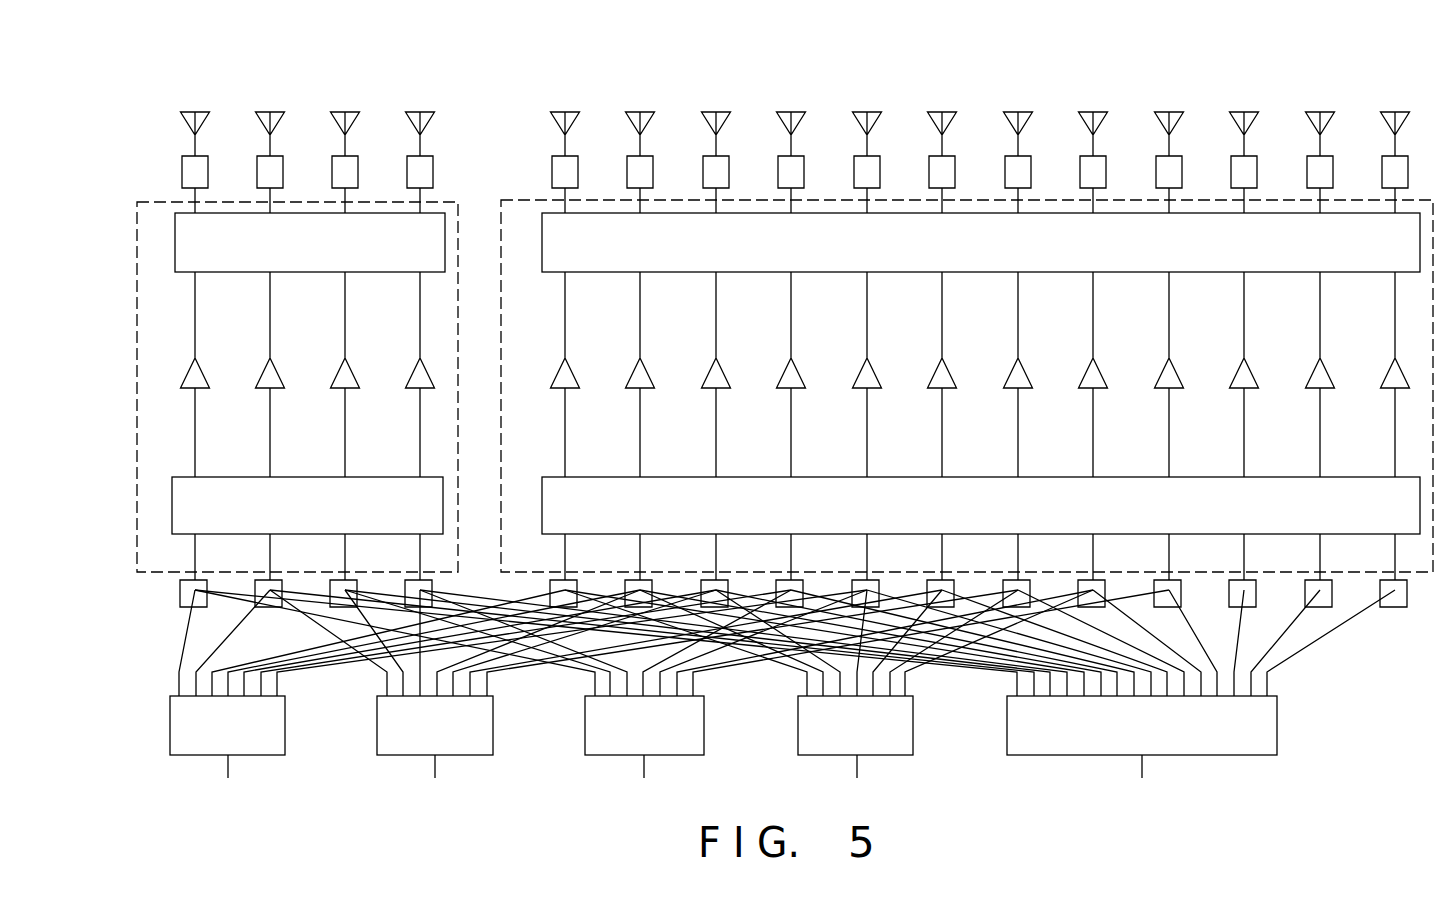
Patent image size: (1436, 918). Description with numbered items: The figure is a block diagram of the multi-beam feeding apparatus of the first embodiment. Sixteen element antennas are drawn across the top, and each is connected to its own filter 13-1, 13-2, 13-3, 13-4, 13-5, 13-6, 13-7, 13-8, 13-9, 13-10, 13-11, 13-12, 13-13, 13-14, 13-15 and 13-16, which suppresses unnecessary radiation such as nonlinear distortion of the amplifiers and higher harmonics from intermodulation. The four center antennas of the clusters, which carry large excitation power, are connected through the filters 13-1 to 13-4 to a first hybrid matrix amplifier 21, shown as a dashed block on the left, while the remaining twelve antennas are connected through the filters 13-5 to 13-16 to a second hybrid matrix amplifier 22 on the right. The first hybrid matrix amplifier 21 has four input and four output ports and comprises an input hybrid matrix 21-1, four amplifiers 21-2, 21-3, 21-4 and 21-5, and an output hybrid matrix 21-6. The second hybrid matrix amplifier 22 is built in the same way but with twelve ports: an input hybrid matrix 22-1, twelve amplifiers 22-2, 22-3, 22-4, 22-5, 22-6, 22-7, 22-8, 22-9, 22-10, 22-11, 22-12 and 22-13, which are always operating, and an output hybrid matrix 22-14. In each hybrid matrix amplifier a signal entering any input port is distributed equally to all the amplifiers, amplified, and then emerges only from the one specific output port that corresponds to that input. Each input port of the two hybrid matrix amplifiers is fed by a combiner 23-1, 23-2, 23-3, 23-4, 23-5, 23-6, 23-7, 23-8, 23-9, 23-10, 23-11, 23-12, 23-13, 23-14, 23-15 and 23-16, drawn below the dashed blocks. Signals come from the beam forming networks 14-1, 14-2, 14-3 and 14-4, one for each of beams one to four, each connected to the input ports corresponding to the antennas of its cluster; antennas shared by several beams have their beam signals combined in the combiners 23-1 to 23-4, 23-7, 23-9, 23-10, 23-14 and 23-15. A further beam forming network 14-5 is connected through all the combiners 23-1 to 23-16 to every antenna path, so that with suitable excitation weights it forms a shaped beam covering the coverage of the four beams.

The filter 13-1 is at (187, 154).
The filter 13-2 is at (262, 154).
The filter 13-3 is at (337, 154).
The filter 13-4 is at (412, 154).
The filter 13-5 is at (557, 154).
The filter 13-6 is at (632, 154).
The filter 13-7 is at (708, 154).
The filter 13-8 is at (783, 154).
The filter 13-9 is at (859, 154).
The filter 13-10 is at (934, 154).
The filter 13-11 is at (1010, 154).
The filter 13-12 is at (1085, 154).
The filter 13-13 is at (1161, 154).
The filter 13-14 is at (1236, 154).
The filter 13-15 is at (1312, 154).
The filter 13-16 is at (1387, 154).
The first hybrid matrix amplifier 21 is at (152, 574).
The input hybrid matrix 21-1 is at (183, 477).
The amplifier 21-2 is at (191, 366).
The amplifier 21-3 is at (266, 366).
The amplifier 21-4 is at (341, 366).
The amplifier 21-5 is at (416, 366).
The output hybrid matrix 21-6 is at (182, 213).
The second hybrid matrix amplifier 22 is at (1424, 574).
The input hybrid matrix 22-1 is at (548, 477).
The amplifier 22-2 is at (561, 366).
The amplifier 22-3 is at (636, 366).
The amplifier 22-4 is at (712, 366).
The amplifier 22-5 is at (787, 366).
The amplifier 22-6 is at (863, 366).
The amplifier 22-7 is at (938, 366).
The amplifier 22-8 is at (1014, 366).
The amplifier 22-9 is at (1089, 366).
The amplifier 22-10 is at (1165, 366).
The amplifier 22-11 is at (1240, 366).
The amplifier 22-12 is at (1316, 366).
The amplifier 22-13 is at (1391, 366).
The output hybrid matrix 22-14 is at (547, 213).
The combiner 23-1 is at (185, 580).
The combiner 23-2 is at (260, 580).
The combiner 23-3 is at (335, 580).
The combiner 23-4 is at (410, 580).
The combiner 23-5 is at (555, 580).
The combiner 23-6 is at (630, 580).
The combiner 23-7 is at (706, 580).
The combiner 23-8 is at (781, 580).
The combiner 23-9 is at (857, 580).
The combiner 23-10 is at (932, 580).
The combiner 23-11 is at (1008, 580).
The combiner 23-12 is at (1083, 580).
The combiner 23-13 is at (1159, 580).
The combiner 23-14 is at (1234, 580).
The combiner 23-15 is at (1310, 580).
The combiner 23-16 is at (1385, 580).
The beam forming network 14-1 is at (270, 757).
The beam forming network 14-2 is at (480, 757).
The beam forming network 14-3 is at (686, 757).
The beam forming network 14-4 is at (898, 757).
The beam forming network 14-5 is at (1195, 757).